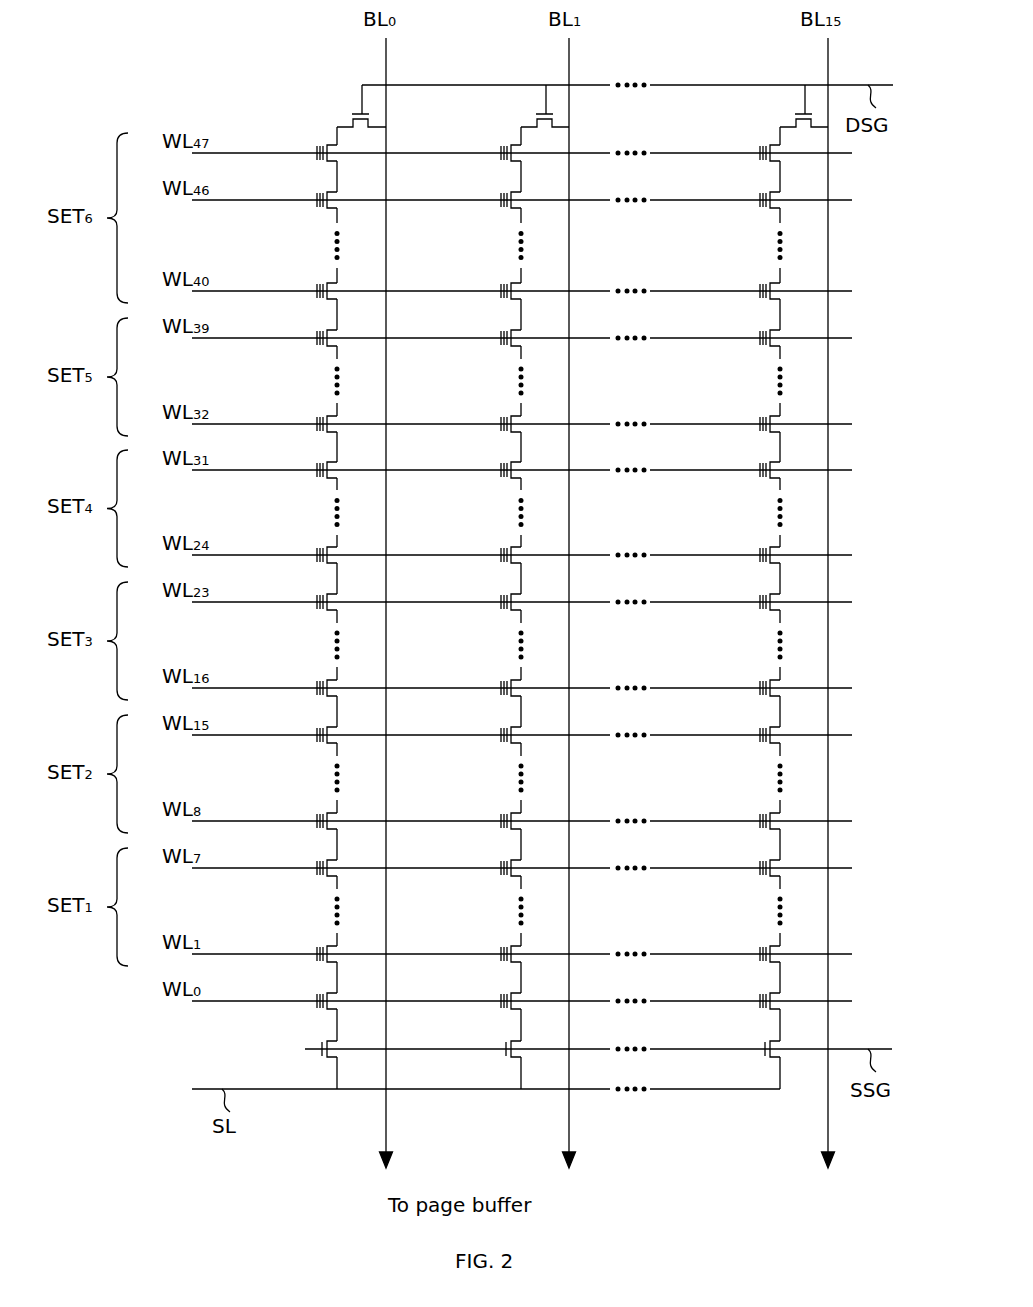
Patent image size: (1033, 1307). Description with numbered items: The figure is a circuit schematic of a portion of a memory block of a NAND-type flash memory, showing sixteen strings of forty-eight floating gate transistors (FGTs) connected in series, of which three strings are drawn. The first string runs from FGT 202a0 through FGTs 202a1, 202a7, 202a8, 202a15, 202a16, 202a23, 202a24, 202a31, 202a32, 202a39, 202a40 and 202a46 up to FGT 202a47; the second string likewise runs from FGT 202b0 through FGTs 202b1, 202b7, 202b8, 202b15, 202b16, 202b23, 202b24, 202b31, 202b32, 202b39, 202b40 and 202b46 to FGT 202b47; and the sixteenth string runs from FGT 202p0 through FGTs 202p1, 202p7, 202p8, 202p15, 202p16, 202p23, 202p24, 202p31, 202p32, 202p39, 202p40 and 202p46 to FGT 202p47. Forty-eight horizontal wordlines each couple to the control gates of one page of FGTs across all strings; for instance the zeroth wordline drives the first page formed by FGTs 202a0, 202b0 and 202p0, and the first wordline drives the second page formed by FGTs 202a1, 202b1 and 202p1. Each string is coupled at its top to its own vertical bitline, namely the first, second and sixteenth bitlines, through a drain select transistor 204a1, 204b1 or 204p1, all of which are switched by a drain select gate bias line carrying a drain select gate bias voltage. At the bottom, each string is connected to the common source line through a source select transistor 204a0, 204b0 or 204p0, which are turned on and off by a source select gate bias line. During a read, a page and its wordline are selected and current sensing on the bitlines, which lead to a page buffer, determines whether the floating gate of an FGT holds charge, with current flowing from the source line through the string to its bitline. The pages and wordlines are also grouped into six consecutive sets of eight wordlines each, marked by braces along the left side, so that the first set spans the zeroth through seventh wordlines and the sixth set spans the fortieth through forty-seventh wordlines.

The floating gate transistor 202a47 is at (327, 162).
The floating gate transistor 202a46 is at (327, 209).
The floating gate transistor 202a40 is at (327, 300).
The floating gate transistor 202a39 is at (327, 347).
The floating gate transistor 202a32 is at (327, 433).
The floating gate transistor 202a31 is at (327, 479).
The floating gate transistor 202a24 is at (327, 564).
The floating gate transistor 202a23 is at (327, 611).
The floating gate transistor 202a16 is at (327, 697).
The floating gate transistor 202a15 is at (327, 744).
The floating gate transistor 202a8 is at (327, 830).
The floating gate transistor 202a7 is at (327, 877).
The floating gate transistor 202a1 is at (327, 963).
The floating gate transistor 202a0 is at (327, 1010).
The floating gate transistor 202b47 is at (511, 162).
The floating gate transistor 202b46 is at (511, 209).
The floating gate transistor 202b40 is at (511, 300).
The floating gate transistor 202b39 is at (511, 347).
The floating gate transistor 202b32 is at (511, 433).
The floating gate transistor 202b31 is at (511, 479).
The floating gate transistor 202b24 is at (511, 564).
The floating gate transistor 202b23 is at (511, 611).
The floating gate transistor 202b16 is at (511, 697).
The floating gate transistor 202b15 is at (511, 744).
The floating gate transistor 202b8 is at (511, 830).
The floating gate transistor 202b7 is at (511, 877).
The floating gate transistor 202b1 is at (511, 963).
The floating gate transistor 202b0 is at (511, 1010).
The floating gate transistor 202p47 is at (770, 162).
The floating gate transistor 202p46 is at (770, 209).
The floating gate transistor 202p40 is at (770, 300).
The floating gate transistor 202p39 is at (770, 347).
The floating gate transistor 202p32 is at (770, 433).
The floating gate transistor 202p31 is at (770, 479).
The floating gate transistor 202p24 is at (770, 564).
The floating gate transistor 202p23 is at (770, 611).
The floating gate transistor 202p16 is at (770, 697).
The floating gate transistor 202p15 is at (770, 744).
The floating gate transistor 202p8 is at (770, 830).
The floating gate transistor 202p7 is at (770, 877).
The floating gate transistor 202p1 is at (770, 963).
The floating gate transistor 202p0 is at (770, 1010).
The drain select transistor 204a1 is at (352, 124).
The drain select transistor 204b1 is at (536, 124).
The drain select transistor 204p1 is at (795, 124).
The source select transistor 204a0 is at (327, 1058).
The source select transistor 204b0 is at (511, 1058).
The source select transistor 204p0 is at (770, 1058).